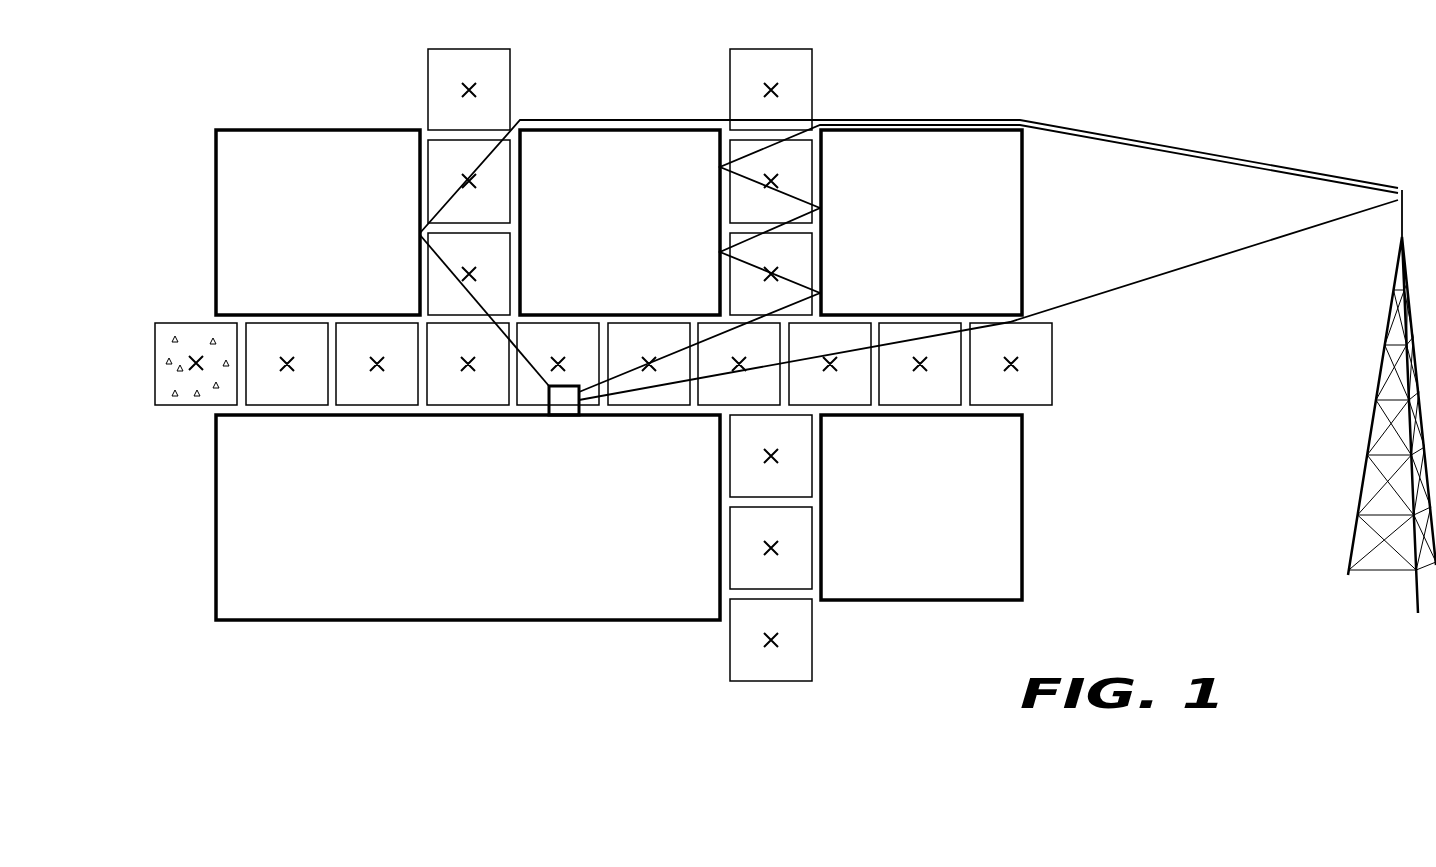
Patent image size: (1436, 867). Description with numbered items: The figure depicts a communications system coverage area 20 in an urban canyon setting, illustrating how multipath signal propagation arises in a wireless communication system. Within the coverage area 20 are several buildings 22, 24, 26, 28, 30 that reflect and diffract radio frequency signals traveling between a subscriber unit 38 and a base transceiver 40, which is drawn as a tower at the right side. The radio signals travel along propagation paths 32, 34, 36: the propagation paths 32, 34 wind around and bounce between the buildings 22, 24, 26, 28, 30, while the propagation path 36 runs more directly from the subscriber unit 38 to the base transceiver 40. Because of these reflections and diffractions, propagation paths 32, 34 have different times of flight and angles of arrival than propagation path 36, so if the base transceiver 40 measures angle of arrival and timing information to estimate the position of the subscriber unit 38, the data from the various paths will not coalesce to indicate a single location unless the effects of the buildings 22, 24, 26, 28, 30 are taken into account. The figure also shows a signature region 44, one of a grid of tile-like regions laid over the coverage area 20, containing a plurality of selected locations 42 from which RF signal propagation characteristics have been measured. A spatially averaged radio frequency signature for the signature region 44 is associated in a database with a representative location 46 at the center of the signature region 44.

The communications system coverage area 20 is at (1262, 658).
The building 22 is at (318, 222).
The building 24 is at (620, 222).
The building 26 is at (921, 222).
The building 28 is at (468, 517).
The building 30 is at (921, 507).
The propagation path 32 is at (797, 280).
The propagation path 34 is at (613, 118).
The propagation path 36 is at (1209, 262).
The subscriber unit 38 is at (565, 415).
The base transceiver 40 is at (1384, 369).
The selected locations 42 is at (155, 358).
The signature region 44 is at (182, 408).
The location 46 is at (196, 350).